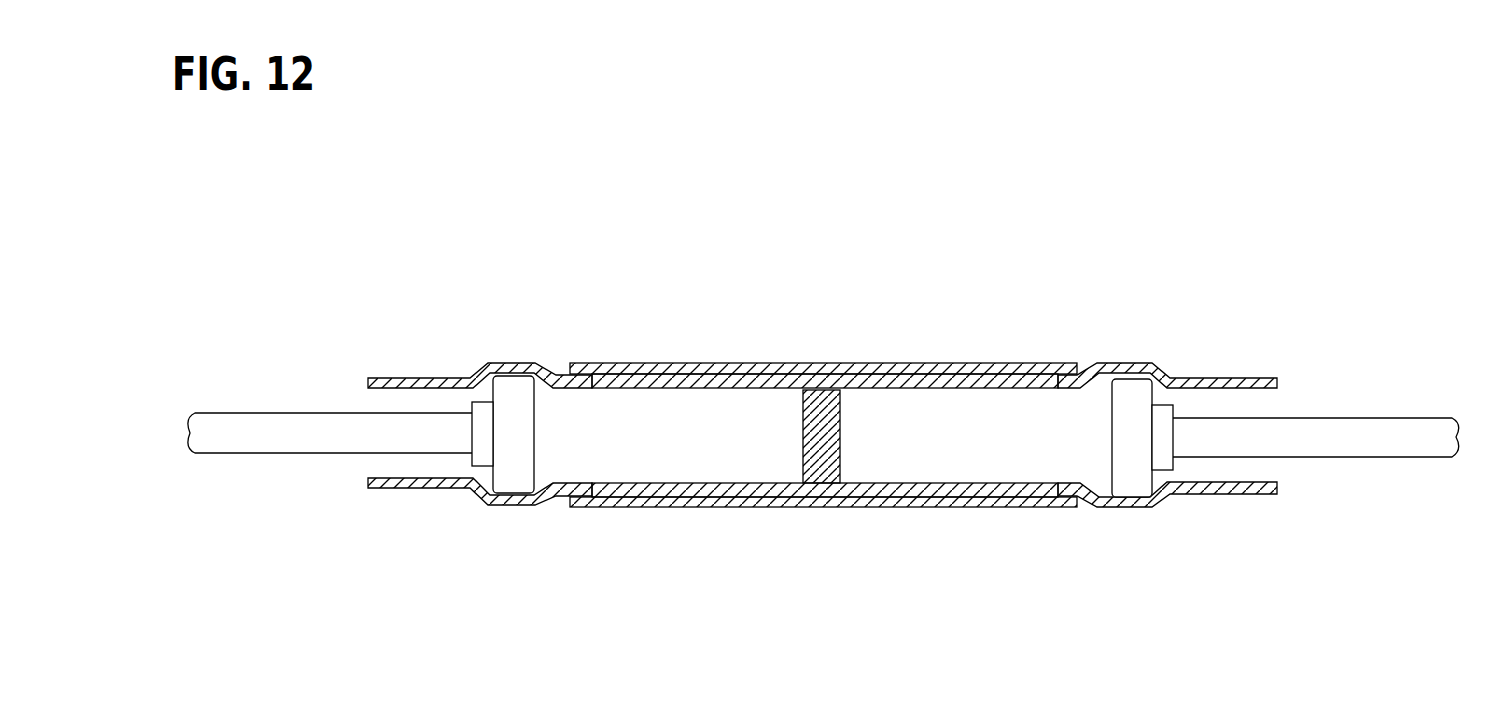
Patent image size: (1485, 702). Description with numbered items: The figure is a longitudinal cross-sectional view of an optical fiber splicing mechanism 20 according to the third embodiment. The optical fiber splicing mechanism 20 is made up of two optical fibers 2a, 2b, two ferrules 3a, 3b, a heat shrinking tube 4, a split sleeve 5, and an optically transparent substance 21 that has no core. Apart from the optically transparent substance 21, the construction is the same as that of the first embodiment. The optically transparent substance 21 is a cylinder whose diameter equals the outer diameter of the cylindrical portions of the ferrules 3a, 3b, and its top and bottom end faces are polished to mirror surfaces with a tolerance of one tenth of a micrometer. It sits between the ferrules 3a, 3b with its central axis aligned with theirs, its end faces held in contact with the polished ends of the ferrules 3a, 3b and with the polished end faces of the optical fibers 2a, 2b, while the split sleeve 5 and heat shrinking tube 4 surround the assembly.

The optical fiber splicing mechanism 20 is at (514, 284).
The optically transparent substance 21 is at (818, 406).
The split sleeve 5 is at (741, 366).
The heat shrinking tube 4 is at (432, 488).
The ferrule 3a is at (503, 468).
The ferrule 3b is at (1123, 472).
The optical fiber 2a is at (303, 435).
The optical fiber 2b is at (1368, 450).